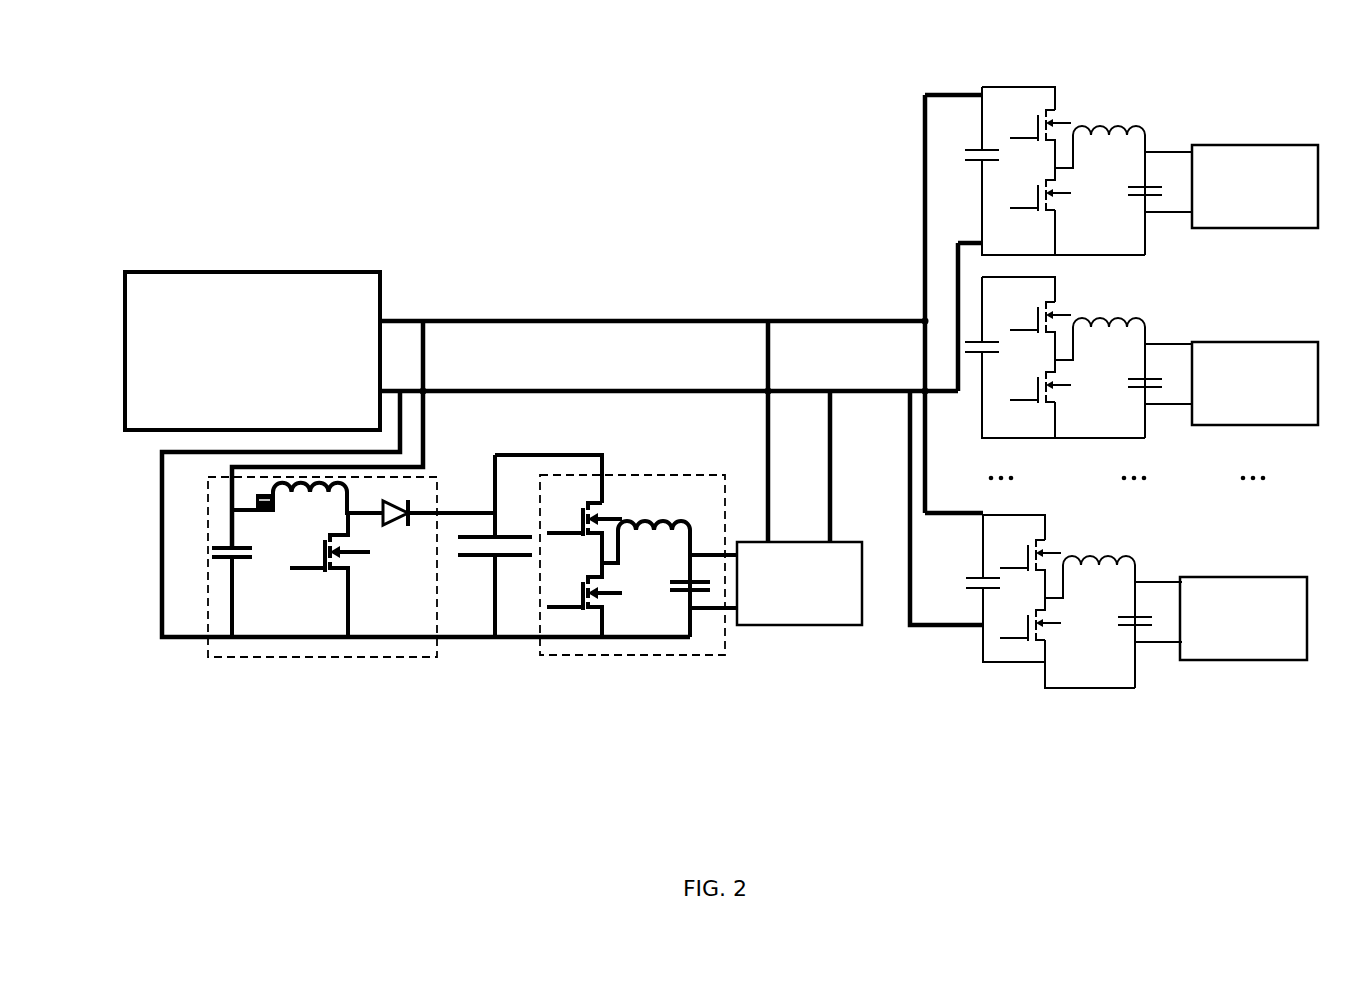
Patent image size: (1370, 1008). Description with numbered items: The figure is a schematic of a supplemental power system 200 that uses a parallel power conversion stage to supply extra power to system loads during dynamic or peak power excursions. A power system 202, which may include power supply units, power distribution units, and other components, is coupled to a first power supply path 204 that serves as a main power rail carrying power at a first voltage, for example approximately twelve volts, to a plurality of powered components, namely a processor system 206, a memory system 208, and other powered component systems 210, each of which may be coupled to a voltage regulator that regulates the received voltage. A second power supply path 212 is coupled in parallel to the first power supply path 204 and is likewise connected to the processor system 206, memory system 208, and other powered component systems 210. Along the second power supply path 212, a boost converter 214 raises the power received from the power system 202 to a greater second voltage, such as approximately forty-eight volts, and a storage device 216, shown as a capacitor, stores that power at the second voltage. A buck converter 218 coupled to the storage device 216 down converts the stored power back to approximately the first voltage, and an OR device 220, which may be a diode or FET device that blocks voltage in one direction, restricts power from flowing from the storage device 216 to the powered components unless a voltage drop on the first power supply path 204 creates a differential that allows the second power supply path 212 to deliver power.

The supplemental power system 200 is at (174, 95).
The power system 202 is at (252, 351).
The first power supply path 204 is at (582, 397).
The processor system 206 is at (1141, 171).
The memory system 208 is at (1141, 357).
The other powered component systems 210 is at (1136, 601).
The second power supply path 212 is at (425, 442).
The boost converter 214 is at (320, 657).
The storage device 216 is at (478, 558).
The buck converter 218 is at (633, 657).
The OR device 220 is at (799, 583).